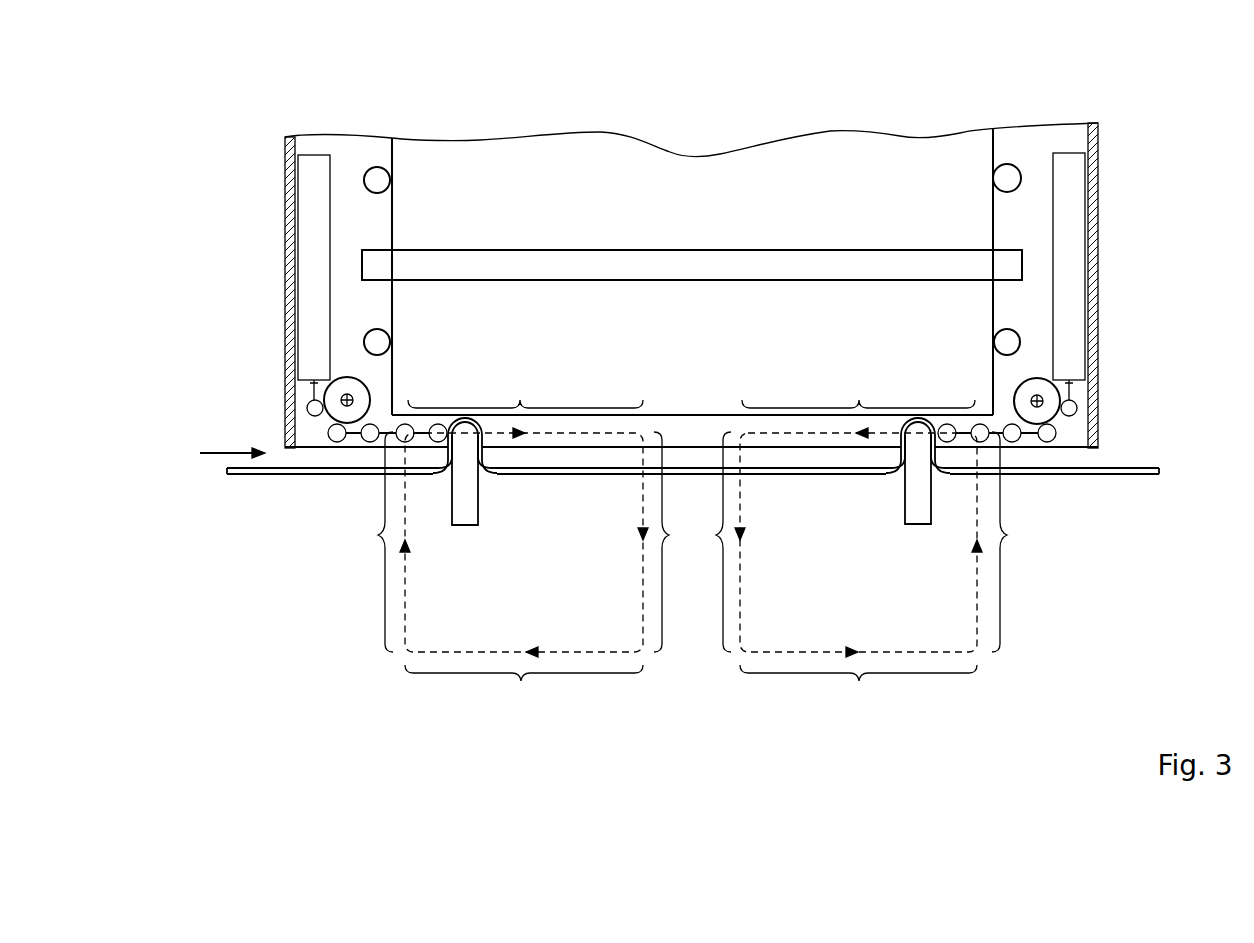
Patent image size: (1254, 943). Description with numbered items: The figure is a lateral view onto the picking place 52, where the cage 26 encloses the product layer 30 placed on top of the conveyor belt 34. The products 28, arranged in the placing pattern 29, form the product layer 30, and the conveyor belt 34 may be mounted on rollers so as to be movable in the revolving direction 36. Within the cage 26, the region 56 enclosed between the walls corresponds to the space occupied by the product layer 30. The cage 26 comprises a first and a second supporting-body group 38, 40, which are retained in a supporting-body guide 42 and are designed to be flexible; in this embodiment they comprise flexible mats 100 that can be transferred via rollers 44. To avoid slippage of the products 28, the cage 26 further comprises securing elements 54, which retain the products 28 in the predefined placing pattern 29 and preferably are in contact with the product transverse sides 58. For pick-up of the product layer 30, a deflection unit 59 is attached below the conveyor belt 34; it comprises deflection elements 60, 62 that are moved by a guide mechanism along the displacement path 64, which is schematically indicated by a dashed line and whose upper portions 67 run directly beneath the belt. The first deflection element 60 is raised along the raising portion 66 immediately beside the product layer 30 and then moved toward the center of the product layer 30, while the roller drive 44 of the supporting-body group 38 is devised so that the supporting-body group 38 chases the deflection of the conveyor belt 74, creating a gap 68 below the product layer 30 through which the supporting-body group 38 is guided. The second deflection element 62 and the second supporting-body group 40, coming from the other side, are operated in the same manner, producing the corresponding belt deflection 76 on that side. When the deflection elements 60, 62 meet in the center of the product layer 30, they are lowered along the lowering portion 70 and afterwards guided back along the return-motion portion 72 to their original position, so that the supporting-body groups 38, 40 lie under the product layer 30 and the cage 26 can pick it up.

The cage 26 is at (1107, 172).
The products 28 is at (803, 158).
The placing pattern 29 is at (895, 134).
The product layer 30 is at (1029, 128).
The conveyor belt 34 is at (232, 476).
The revolving direction 36 is at (225, 452).
The first supporting-body group 38 is at (255, 225).
The second supporting-body group 40 is at (1118, 225).
The supporting-body guide 42 is at (312, 297).
The rollers 44 is at (345, 385).
The picking place 52 is at (1138, 418).
The securing elements 54 is at (380, 180).
The chamber 56 is at (697, 353).
The product transverse sides 58 is at (392, 138).
The deflection unit 59 is at (1109, 553).
The first deflection element 60 is at (468, 525).
The second deflection element 62 is at (918, 524).
The displacement path 64 is at (466, 665).
The raising portion 66 is at (378, 535).
The upper section 67 is at (520, 398).
The gap 68 is at (369, 457).
The lowering portion 70 is at (710, 532).
The return-motion portion 72 is at (521, 681).
The deflection of the conveyor belt 74 is at (500, 504).
The flow direction 76 is at (877, 504).
The flexible mats 100 is at (337, 442).